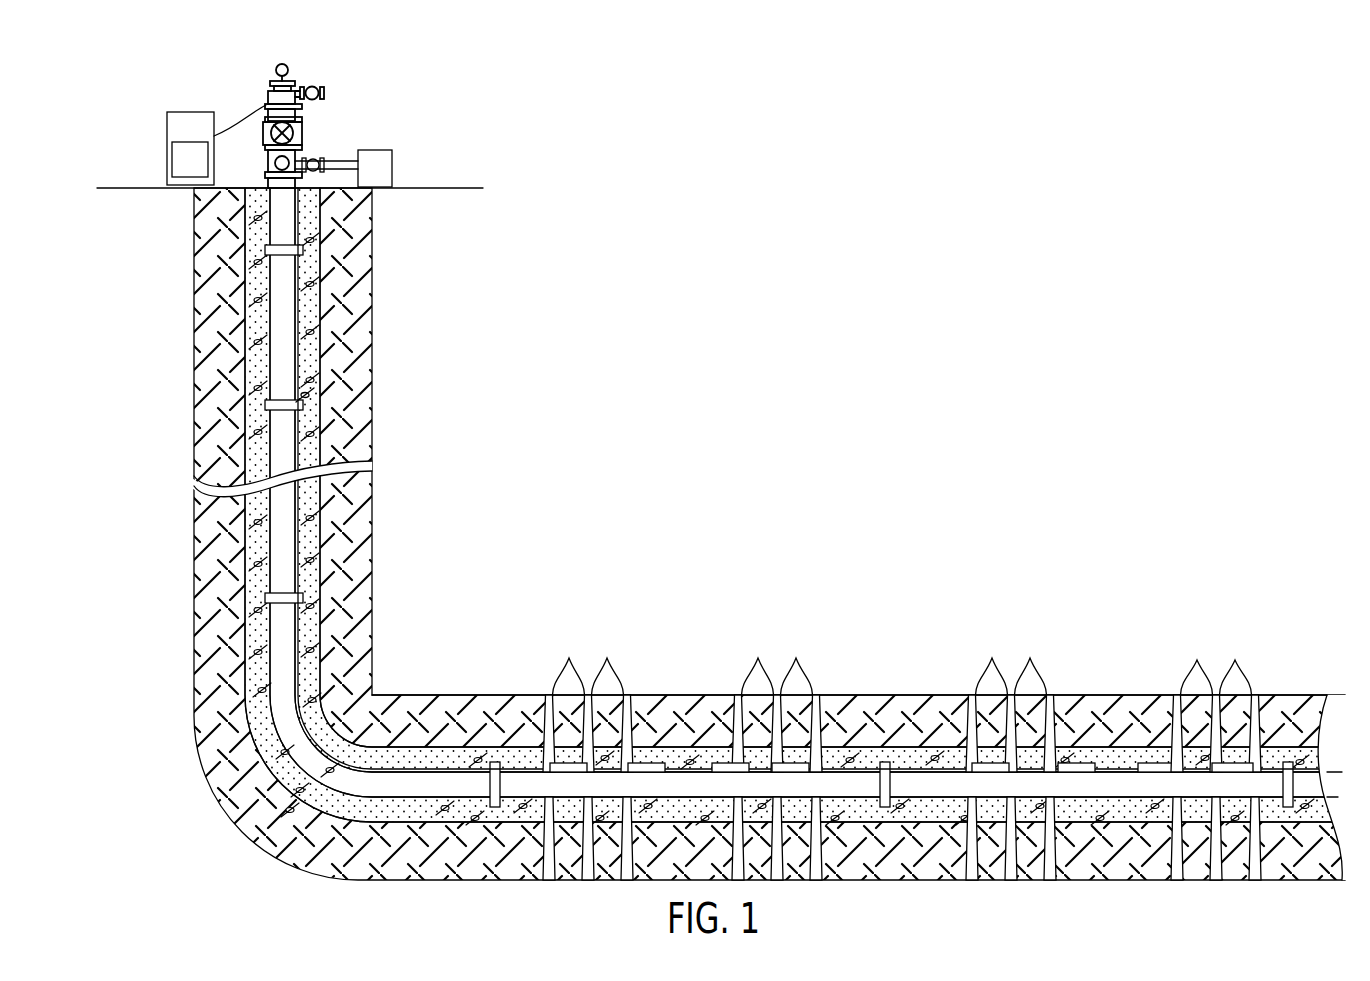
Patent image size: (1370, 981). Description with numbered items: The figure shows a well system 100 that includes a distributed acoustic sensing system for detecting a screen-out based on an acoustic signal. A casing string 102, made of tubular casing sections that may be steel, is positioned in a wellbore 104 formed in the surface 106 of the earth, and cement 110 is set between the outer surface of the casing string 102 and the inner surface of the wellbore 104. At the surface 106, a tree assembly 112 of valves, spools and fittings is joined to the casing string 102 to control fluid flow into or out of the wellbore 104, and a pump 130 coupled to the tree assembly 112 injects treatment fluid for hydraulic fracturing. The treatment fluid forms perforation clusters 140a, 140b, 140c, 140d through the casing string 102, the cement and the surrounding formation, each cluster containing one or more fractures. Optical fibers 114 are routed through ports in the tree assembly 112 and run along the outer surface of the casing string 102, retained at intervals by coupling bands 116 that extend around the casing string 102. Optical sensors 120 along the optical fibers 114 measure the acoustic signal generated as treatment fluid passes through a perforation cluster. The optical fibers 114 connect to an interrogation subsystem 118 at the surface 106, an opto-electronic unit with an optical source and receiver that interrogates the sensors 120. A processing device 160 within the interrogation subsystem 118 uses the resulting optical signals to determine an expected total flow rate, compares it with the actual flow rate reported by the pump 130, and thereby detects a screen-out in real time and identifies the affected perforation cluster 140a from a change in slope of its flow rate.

The well system 100 is at (463, 88).
The casing string 102 is at (243, 284).
The wellbore 104 is at (262, 183).
The surface 106 is at (474, 187).
The cement 110 is at (322, 440).
The tree assembly 112 is at (302, 136).
The optical fibers 114 is at (270, 98).
The coupling bands 116 is at (305, 400).
The interrogation subsystem 118 is at (186, 115).
The optical sensors 120 is at (924, 753).
The pump 130 is at (393, 160).
The perforation cluster 140a is at (1197, 660).
The perforation cluster 140b is at (996, 655).
The perforation cluster 140c is at (758, 658).
The perforation cluster 140d is at (573, 655).
The processing device 160 is at (172, 158).